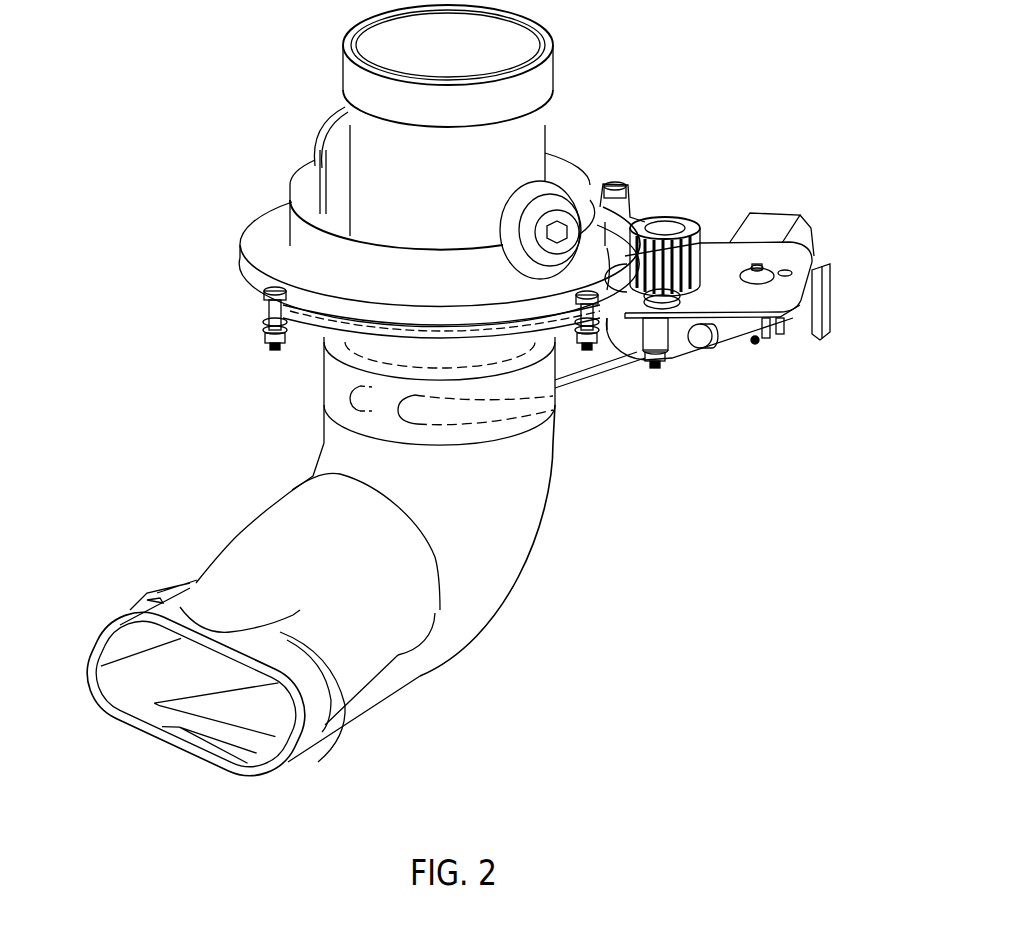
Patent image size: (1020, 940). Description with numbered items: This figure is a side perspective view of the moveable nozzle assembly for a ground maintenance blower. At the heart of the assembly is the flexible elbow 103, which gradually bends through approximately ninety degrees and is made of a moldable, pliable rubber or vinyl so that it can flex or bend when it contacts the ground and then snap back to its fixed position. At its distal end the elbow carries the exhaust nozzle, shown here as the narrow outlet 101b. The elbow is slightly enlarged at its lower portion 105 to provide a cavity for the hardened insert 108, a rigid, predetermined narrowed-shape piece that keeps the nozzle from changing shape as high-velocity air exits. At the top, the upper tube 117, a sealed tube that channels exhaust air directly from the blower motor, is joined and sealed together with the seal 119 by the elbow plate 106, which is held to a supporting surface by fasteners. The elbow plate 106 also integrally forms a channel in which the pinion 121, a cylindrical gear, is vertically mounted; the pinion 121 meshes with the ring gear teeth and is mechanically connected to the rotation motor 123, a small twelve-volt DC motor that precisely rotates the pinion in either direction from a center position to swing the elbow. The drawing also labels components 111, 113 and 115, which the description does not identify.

The outlet 101b is at (468, 706).
The flexible elbow 103 is at (510, 548).
The lower portion 105 is at (242, 540).
The elbow plate 106 is at (800, 263).
The hardened insert 108 is at (120, 688).
The mounting flange 111 is at (262, 222).
The rotating hub 113 is at (590, 176).
The fastener 115 is at (623, 186).
The upper tube 117 is at (545, 122).
The seal 119 is at (543, 74).
The pinion 121 is at (672, 228).
The rotation motor 123 is at (772, 222).